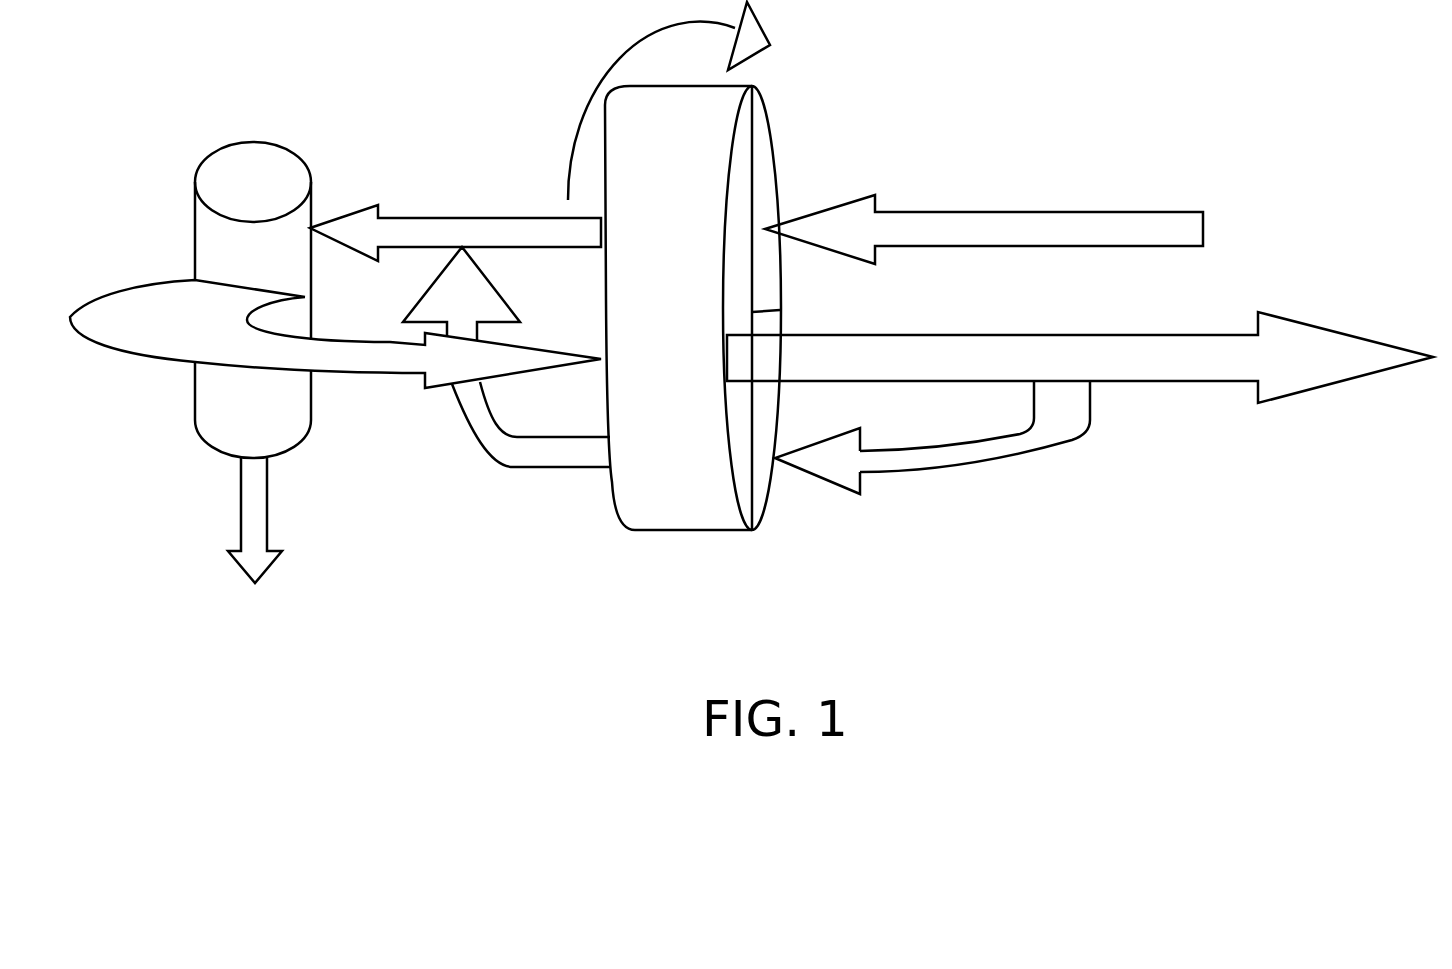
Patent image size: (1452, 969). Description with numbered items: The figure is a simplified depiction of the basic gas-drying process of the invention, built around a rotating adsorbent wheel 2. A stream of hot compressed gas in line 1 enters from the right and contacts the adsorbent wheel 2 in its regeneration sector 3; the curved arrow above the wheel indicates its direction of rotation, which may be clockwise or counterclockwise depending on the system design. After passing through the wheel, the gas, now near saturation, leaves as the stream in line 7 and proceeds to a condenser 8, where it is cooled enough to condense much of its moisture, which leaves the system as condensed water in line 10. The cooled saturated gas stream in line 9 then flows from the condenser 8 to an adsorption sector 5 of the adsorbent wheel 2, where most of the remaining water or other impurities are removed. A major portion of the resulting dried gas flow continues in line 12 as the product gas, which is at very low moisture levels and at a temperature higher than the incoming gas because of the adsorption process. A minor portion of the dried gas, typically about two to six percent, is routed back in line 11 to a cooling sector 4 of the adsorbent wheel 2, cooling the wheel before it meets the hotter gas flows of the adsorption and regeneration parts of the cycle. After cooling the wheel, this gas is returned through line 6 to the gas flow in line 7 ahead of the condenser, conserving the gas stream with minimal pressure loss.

The line 1 is at (1006, 222).
The adsorbent wheel 2 is at (678, 327).
The regeneration sector 3 is at (765, 165).
The cooling sector 4 is at (763, 445).
The adsorption sector 5 is at (743, 457).
The line 6 is at (498, 440).
The line 7 is at (490, 225).
The condenser 8 is at (247, 270).
The line 9 is at (127, 323).
The line 10 is at (240, 500).
The line 11 is at (1022, 450).
The line 12 is at (1000, 352).